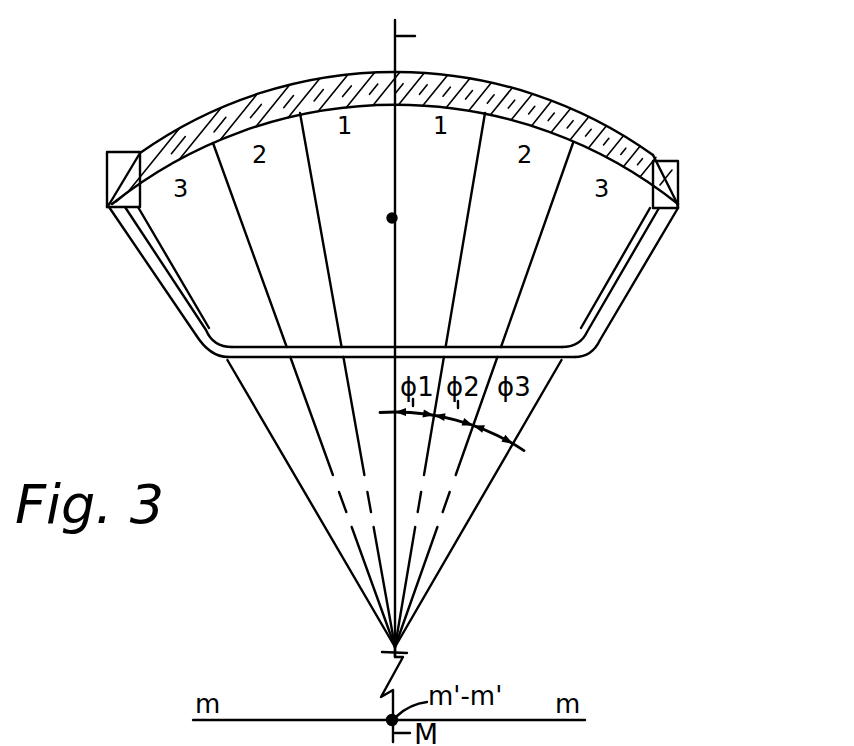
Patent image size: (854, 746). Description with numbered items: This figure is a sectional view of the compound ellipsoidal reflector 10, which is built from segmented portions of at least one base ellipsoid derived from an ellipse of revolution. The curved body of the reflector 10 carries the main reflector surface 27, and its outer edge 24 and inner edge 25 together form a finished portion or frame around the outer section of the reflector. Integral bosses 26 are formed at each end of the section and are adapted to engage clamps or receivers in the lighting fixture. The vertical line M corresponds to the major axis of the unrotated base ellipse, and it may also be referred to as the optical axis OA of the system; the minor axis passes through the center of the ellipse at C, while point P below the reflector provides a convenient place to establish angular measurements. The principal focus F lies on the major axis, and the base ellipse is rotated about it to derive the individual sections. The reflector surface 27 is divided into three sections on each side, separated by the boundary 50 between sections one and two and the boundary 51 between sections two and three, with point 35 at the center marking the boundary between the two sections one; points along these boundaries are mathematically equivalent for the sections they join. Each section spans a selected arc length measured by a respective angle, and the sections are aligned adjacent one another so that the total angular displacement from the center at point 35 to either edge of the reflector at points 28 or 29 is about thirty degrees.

The compound ellipsoidal reflector 10 is at (554, 96).
The outer edge 24 is at (170, 302).
The inner edge 25 is at (198, 313).
The integral bosses 26 is at (107, 167).
The main reflector surface 27 is at (582, 293).
The edge point of reflector 28 is at (118, 207).
The edge point of reflector 29 is at (667, 209).
The center point of reflector surface 35 is at (397, 100).
The boundary between sections one and two 50 is at (319, 218).
The boundary between sections two and three 51 is at (252, 252).
The principal focus F is at (396, 218).
The major axis line M— M is at (419, 40).
The optical axis OA is at (395, 532).
The point P is at (398, 648).
The center of ellipse C is at (388, 717).